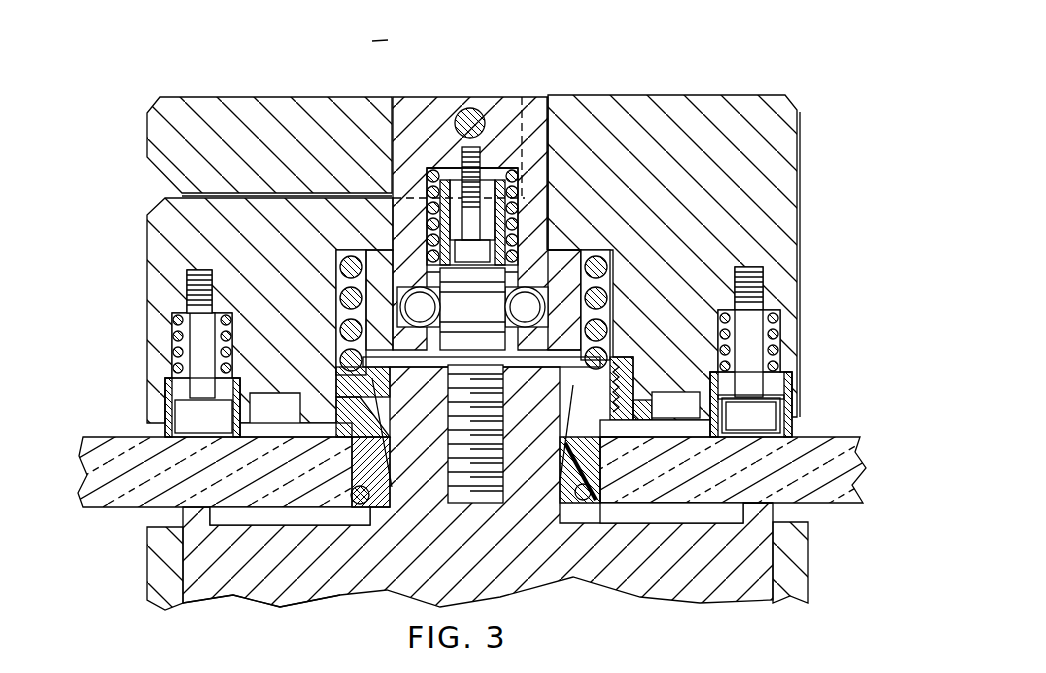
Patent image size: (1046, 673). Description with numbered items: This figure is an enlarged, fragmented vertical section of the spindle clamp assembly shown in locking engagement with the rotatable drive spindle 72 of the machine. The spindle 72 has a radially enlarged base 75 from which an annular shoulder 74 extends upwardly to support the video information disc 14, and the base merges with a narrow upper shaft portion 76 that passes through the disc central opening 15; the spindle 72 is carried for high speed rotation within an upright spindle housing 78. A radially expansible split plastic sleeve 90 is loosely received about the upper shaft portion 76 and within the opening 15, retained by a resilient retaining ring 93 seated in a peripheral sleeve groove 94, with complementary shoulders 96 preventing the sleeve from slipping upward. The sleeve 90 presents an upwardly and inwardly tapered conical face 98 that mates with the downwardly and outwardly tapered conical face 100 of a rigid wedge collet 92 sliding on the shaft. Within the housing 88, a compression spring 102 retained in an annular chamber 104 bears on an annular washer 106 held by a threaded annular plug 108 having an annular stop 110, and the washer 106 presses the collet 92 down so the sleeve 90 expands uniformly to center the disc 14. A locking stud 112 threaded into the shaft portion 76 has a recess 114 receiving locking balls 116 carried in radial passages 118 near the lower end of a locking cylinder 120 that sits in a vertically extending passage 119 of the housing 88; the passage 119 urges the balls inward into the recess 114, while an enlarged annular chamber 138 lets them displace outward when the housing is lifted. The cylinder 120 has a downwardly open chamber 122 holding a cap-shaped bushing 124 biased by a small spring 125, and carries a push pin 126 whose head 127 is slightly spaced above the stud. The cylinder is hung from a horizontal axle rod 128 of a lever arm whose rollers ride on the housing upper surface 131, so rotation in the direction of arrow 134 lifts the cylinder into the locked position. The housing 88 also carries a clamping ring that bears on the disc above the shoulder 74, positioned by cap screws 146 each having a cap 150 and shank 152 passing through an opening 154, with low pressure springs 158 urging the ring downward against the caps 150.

The video information disc 14 is at (842, 487).
The central opening 15 is at (612, 483).
The rotatable drive spindle 72 is at (214, 548).
The annular shoulder 74 is at (758, 512).
The radially enlarged base 75 is at (275, 597).
The upper shaft portion 76 is at (421, 477).
The spindle housing 78 is at (806, 587).
The housing 88 is at (797, 141).
The radially expansible sleeve 90 is at (581, 530).
The wedge collet 92 is at (573, 407).
The resilient retaining ring 93 is at (655, 497).
The peripheral sleeve groove 94 is at (576, 528).
The complementary shaped shoulders 96 is at (558, 487).
The tapered conical face 98 is at (603, 447).
The tapered conical face 100 is at (386, 452).
The compression spring 102 is at (605, 304).
The annular chamber 104 is at (612, 290).
The annular washer 106 is at (625, 350).
The annular plug 108 is at (640, 383).
The annular stop 110 is at (650, 405).
The locking stud 112 is at (560, 236).
The locking recess 114 is at (460, 310).
The locking balls 116 is at (337, 283).
The radial passages 118 is at (587, 270).
The vertically extending passage 119 is at (548, 106).
The locking cylinder 120 is at (548, 196).
The cylindrical chamber 122 is at (494, 165).
The cap-shaped bushing 124 is at (430, 247).
The compression spring 125 is at (548, 172).
The push pin 126 is at (452, 177).
The head 127 is at (435, 222).
The axle rod 128 is at (471, 107).
The upper surface 131 is at (352, 192).
The arrow 134 is at (326, 74).
The enlarged annular chamber 138 is at (345, 323).
The cap screws 146 is at (770, 344).
The cap 150 is at (780, 435).
The shank 152 is at (755, 292).
The opening 154 is at (774, 358).
The low pressure spring 158 is at (767, 311).